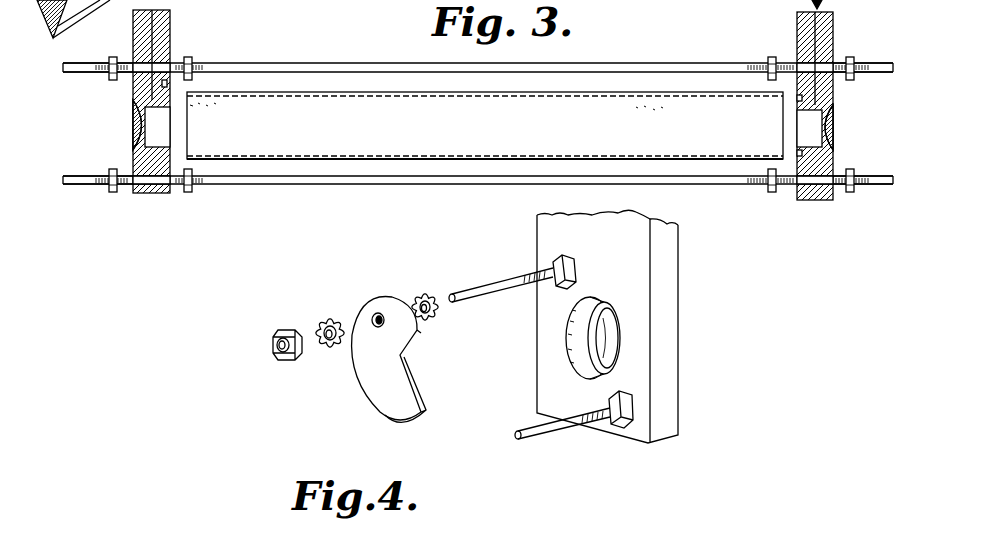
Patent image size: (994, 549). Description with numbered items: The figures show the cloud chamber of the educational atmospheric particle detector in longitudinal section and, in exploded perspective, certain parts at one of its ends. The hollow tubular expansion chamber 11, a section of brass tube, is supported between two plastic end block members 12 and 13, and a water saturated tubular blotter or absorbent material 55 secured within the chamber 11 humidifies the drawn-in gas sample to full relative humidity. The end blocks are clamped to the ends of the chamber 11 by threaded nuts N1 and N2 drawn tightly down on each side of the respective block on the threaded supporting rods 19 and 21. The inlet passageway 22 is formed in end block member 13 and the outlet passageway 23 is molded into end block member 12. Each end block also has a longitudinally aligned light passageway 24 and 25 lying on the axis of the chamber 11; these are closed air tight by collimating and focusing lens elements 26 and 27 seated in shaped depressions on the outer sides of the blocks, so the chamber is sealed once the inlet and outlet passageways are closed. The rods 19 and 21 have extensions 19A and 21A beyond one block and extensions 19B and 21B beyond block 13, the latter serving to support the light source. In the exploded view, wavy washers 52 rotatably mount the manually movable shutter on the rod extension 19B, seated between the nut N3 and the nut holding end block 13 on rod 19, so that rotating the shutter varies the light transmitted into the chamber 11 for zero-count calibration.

In FIG. 3, the tubular expansion chamber 11 is at (313, 92).
In FIG. 3, the end block member 12 is at (147, 119).
In FIG. 3, the end block member 13 is at (807, 123).
In FIG. 4, the end block member 13 is at (673, 287).
In FIG. 3, the threaded supporting rod 19 is at (707, 63).
In FIG. 3, the extension of threaded supporting rod 19A is at (85, 72).
In FIG. 3, the extension of threaded supporting rod 19B is at (880, 64).
In FIG. 4, the extension of threaded supporting rod 19B is at (484, 290).
In FIG. 3, the threaded supporting rod 21 is at (727, 184).
In FIG. 3, the extension of threaded supporting rod 21A is at (73, 184).
In FIG. 3, the extension of threaded supporting rod 21B is at (877, 176).
In FIG. 4, the extension of threaded supporting rod 21B is at (552, 429).
In FIG. 3, the inlet passageway 22 is at (818, 33).
In FIG. 3, the outlet passageway 23 is at (152, 35).
In FIG. 3, the light passageway 24 is at (805, 127).
In FIG. 3, the light passageway 25 is at (160, 130).
In FIG. 4, the light passageway 25 is at (580, 345).
In FIG. 3, the lens element 26 is at (832, 127).
In FIG. 3, the lens element 27 is at (133, 122).
In FIG. 4, the wavy washers 52 is at (416, 293).
In FIG. 3, the absorbent material 55 is at (656, 157).
In FIG. 3, the threaded nut N1 is at (861, 210).
In FIG. 3, the threaded nut N2 is at (104, 205).
In FIG. 4, the nut N3 is at (288, 330).